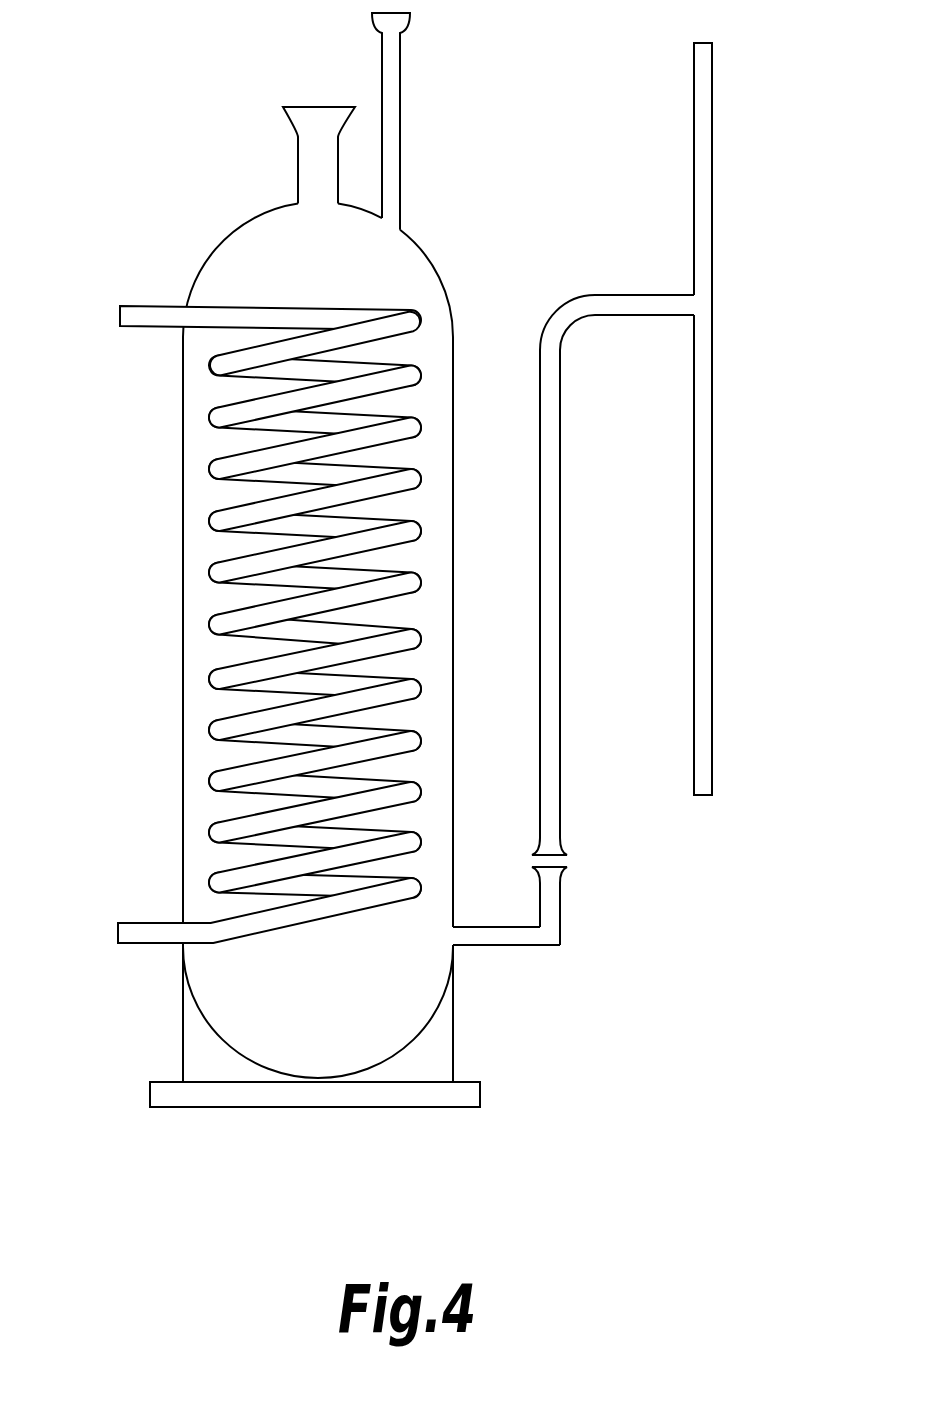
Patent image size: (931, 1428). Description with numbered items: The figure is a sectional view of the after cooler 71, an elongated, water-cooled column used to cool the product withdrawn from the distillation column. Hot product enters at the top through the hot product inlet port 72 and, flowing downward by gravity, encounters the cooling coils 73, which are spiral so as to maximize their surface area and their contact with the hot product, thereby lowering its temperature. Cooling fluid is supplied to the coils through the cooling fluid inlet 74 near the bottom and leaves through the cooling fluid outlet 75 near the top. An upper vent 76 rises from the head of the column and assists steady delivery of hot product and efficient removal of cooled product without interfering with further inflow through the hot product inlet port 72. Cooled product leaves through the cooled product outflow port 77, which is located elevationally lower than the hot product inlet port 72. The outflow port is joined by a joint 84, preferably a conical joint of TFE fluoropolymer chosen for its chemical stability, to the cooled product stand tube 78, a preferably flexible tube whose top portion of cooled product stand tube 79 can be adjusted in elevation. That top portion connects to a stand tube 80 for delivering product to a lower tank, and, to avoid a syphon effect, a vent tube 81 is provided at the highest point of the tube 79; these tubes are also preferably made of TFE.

The after cooler 71 is at (182, 697).
The hot product inlet port 72 is at (313, 107).
The cooling coils 73 is at (213, 573).
The cooling fluid inlet 74 is at (118, 935).
The cooling fluid outlet 75 is at (118, 315).
The upper vent 76 is at (400, 95).
The cooled product outflow port 77 is at (537, 947).
The cooled product stand tube 78 is at (560, 473).
The top portion of cooled product stand tube 79 is at (627, 315).
The stand tube 80 is at (712, 450).
The vent tube 81 is at (708, 145).
The joint 84 is at (572, 852).